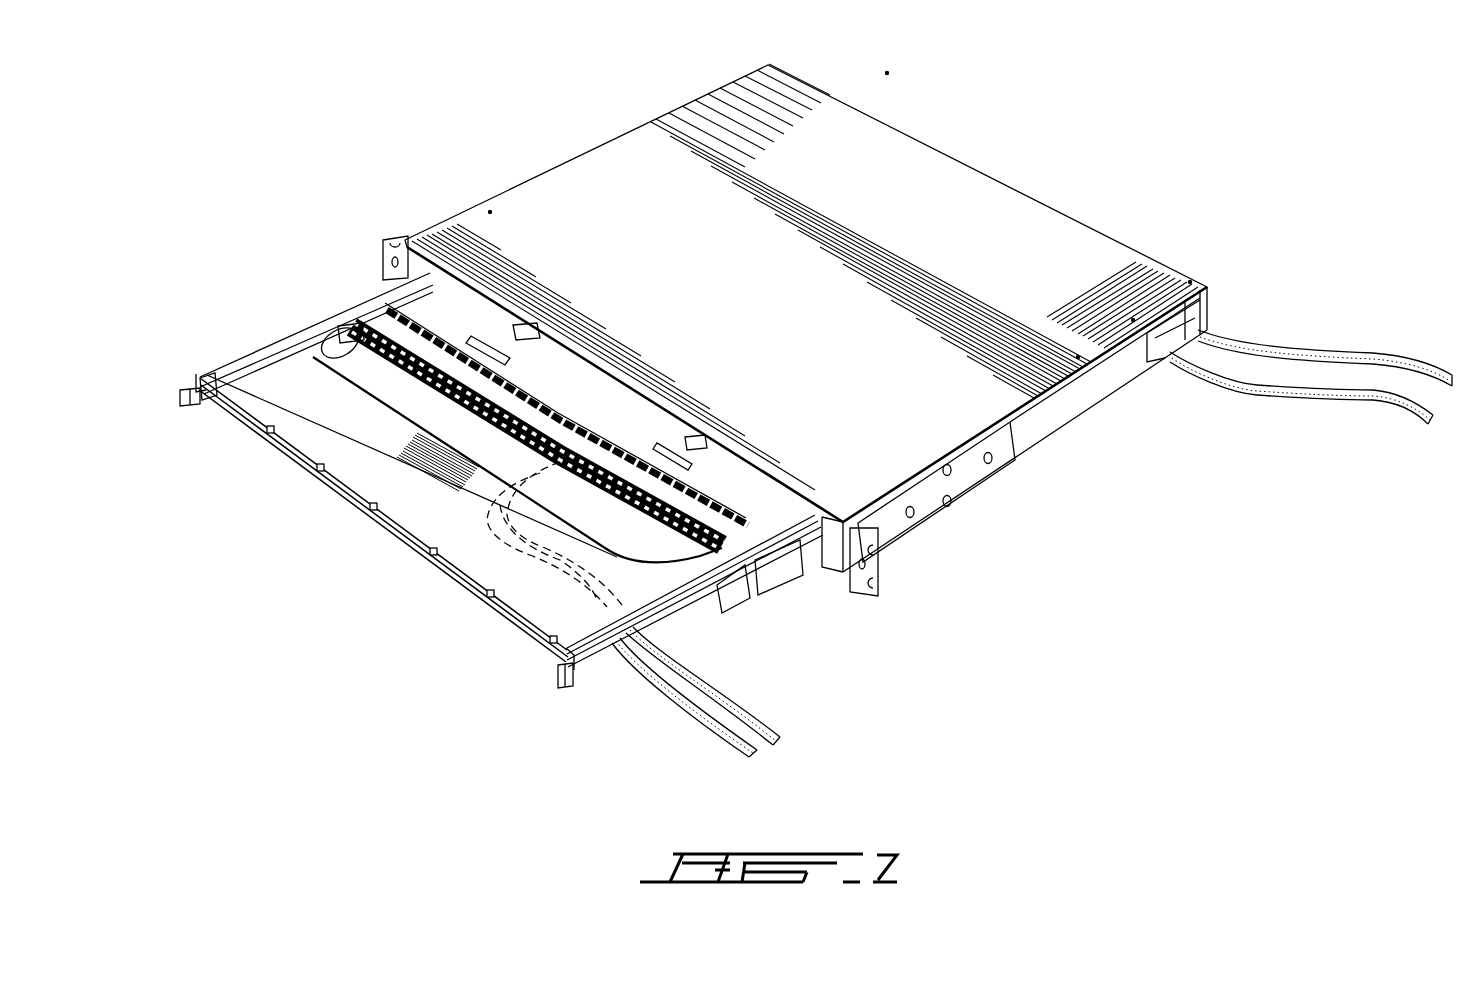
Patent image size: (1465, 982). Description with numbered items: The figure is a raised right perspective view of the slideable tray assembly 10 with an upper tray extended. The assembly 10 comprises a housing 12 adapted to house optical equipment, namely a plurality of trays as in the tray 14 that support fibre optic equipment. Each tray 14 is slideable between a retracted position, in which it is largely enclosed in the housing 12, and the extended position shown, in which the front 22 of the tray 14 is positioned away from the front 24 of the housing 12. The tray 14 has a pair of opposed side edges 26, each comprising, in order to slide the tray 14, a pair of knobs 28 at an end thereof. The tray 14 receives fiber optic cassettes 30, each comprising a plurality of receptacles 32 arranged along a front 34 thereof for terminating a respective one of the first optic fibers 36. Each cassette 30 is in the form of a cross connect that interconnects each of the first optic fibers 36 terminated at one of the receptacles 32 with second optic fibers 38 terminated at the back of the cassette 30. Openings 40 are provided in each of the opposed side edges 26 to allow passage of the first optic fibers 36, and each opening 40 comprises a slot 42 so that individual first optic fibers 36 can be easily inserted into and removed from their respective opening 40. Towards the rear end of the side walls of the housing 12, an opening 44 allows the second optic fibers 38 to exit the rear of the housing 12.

The slideable tray assembly 10 is at (1065, 176).
The housing 12 is at (975, 378).
The tray 14 is at (283, 412).
The front of the tray 22 is at (357, 497).
The front of the housing 24 is at (828, 545).
The side edges 26 is at (273, 335).
The knobs 28 is at (185, 398).
The fiber optic cassettes 30 is at (587, 353).
The receptacles 32 is at (480, 430).
The front of the cassette 34 is at (345, 348).
The first optic fibers 36 is at (517, 547).
The second optic fibers 38 is at (1305, 392).
The openings 40 is at (632, 660).
The slot 42 is at (201, 379).
The opening 44 is at (1195, 322).